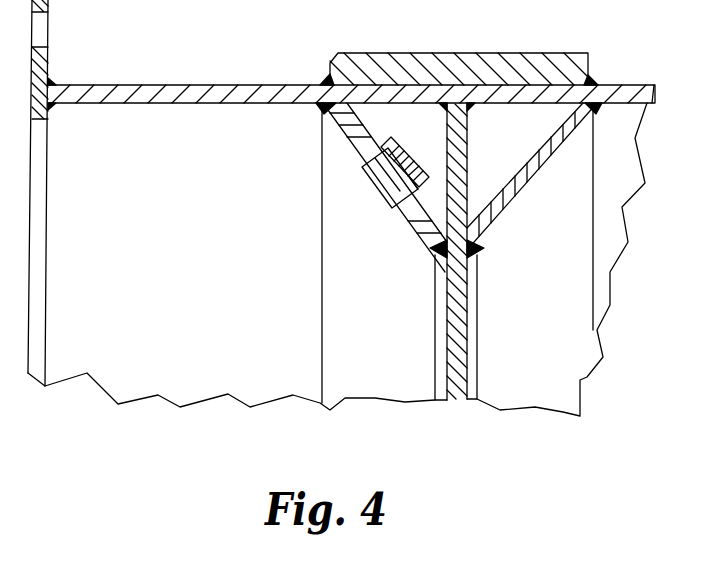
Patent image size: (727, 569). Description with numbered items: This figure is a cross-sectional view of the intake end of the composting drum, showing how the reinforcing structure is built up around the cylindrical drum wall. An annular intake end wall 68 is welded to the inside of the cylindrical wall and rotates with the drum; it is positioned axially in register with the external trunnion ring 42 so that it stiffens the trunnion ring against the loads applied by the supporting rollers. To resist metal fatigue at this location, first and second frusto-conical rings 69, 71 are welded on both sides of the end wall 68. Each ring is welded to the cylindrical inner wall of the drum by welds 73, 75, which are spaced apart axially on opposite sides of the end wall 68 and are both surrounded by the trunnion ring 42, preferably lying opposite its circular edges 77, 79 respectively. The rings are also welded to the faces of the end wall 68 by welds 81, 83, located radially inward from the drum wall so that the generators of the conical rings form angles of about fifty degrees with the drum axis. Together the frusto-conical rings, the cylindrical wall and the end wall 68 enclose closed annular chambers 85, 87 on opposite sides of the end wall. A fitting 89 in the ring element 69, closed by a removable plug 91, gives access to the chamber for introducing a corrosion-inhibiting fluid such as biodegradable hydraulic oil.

The trunnion ring 42 is at (455, 53).
The intake end wall 68 is at (468, 138).
The frusto-conical ring 69 is at (360, 152).
The frusto-conical ring 71 is at (515, 198).
The weld 73 is at (323, 104).
The weld 75 is at (597, 107).
The circular edge 77 is at (330, 63).
The circular edge 79 is at (590, 62).
The weld 81 is at (440, 250).
The weld 83 is at (472, 250).
The annular chamber 85 is at (389, 118).
The annular chamber 87 is at (537, 118).
The fitting 89 is at (400, 200).
The removable plug 91 is at (378, 168).